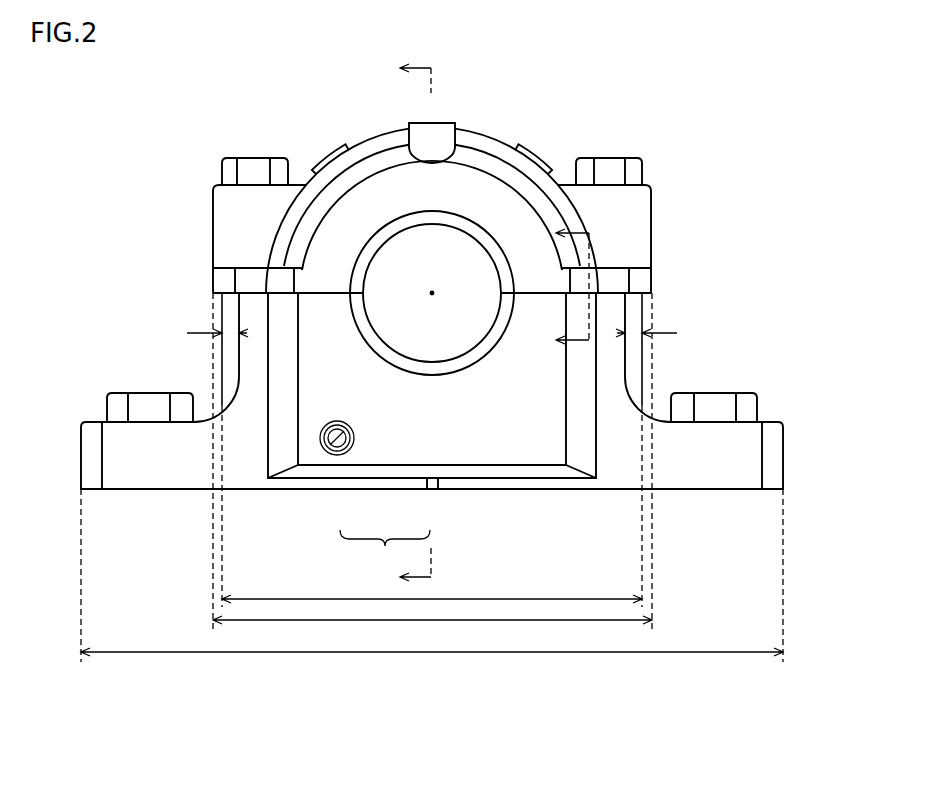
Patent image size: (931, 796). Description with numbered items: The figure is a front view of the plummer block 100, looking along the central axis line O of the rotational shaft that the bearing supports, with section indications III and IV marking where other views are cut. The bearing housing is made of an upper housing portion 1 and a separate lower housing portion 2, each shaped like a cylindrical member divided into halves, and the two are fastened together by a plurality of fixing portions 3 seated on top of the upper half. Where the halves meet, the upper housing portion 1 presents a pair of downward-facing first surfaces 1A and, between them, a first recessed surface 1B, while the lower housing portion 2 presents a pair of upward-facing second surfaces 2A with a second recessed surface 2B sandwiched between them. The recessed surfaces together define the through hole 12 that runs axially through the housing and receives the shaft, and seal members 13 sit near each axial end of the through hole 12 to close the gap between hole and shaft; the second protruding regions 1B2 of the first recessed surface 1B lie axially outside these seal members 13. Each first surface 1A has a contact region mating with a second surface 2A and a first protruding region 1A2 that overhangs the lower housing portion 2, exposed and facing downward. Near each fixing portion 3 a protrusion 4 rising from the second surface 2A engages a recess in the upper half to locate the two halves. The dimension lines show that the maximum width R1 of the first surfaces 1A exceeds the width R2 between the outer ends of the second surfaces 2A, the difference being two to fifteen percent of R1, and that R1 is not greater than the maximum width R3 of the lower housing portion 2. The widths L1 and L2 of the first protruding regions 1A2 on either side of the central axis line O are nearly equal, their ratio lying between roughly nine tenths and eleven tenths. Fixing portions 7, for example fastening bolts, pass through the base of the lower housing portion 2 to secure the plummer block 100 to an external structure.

The plummer block 100 is at (787, 92).
The upper housing portion 1 is at (497, 163).
The first surface 1A is at (378, 208).
The first protruding region 1A2 is at (333, 290).
The first recessed surface 1B is at (383, 227).
The second protruding region 1B2 is at (392, 238).
The lower housing portion 2 is at (685, 478).
The second surface 2A is at (637, 292).
The second recessed surface 2B is at (399, 358).
The fixing portion 3 is at (255, 170).
The protrusion 4 is at (270, 290).
The fixing portion 7 is at (150, 405).
The through hole 12 is at (385, 547).
The seal member 13 is at (463, 217).
The central axis line O is at (437, 292).
The maximum width L1 is at (220, 328).
The maximum width L2 is at (645, 328).
The maximum width R1 is at (433, 620).
The width R2 is at (482, 597).
The maximum width R3 is at (690, 652).
The section line III- III is at (402, 324).
The section line IV- IV is at (558, 290).